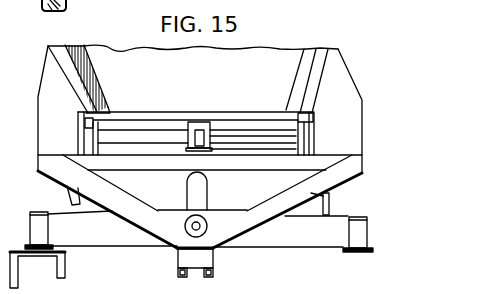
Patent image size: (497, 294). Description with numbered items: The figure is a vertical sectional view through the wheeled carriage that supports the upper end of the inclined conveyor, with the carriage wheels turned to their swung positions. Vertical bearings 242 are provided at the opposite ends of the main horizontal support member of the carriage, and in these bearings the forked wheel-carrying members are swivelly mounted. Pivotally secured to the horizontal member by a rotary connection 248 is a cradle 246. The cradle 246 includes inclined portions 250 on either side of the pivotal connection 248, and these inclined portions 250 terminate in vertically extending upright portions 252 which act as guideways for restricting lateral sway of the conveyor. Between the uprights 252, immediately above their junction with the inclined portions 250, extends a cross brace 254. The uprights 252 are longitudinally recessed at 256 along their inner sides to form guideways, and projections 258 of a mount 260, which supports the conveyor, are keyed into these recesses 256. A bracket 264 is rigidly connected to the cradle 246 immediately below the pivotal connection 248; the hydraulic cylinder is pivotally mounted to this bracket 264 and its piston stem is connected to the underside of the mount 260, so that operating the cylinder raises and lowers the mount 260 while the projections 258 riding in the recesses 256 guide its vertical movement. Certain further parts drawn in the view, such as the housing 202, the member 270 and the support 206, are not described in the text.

The housing 202 is at (0, 143).
The upright portions 252 is at (54, 71).
The projections 258 is at (100, 107).
The recesses 256 is at (100, 122).
The bracket 270 is at (207, 147).
The mount 260 is at (236, 137).
The cross brace 254 is at (55, 177).
The inclined portions 250 is at (270, 200).
The support post 206 is at (32, 227).
The rotary connection 248 is at (193, 230).
The bracket 264 is at (213, 276).
The vertical bearings 242 is at (358, 238).
The cradle 246 is at (330, 200).